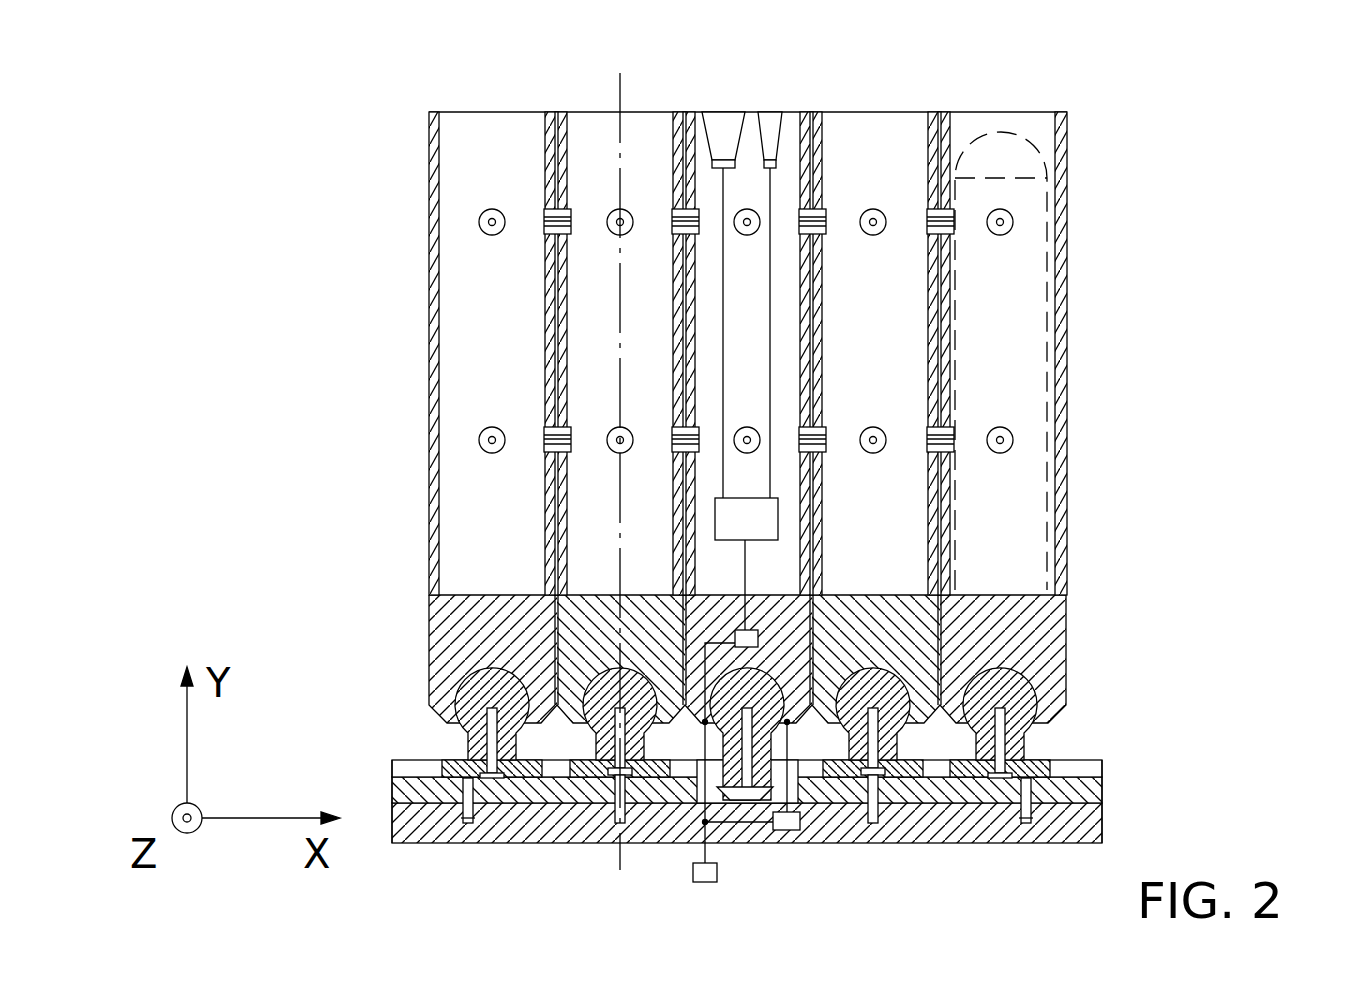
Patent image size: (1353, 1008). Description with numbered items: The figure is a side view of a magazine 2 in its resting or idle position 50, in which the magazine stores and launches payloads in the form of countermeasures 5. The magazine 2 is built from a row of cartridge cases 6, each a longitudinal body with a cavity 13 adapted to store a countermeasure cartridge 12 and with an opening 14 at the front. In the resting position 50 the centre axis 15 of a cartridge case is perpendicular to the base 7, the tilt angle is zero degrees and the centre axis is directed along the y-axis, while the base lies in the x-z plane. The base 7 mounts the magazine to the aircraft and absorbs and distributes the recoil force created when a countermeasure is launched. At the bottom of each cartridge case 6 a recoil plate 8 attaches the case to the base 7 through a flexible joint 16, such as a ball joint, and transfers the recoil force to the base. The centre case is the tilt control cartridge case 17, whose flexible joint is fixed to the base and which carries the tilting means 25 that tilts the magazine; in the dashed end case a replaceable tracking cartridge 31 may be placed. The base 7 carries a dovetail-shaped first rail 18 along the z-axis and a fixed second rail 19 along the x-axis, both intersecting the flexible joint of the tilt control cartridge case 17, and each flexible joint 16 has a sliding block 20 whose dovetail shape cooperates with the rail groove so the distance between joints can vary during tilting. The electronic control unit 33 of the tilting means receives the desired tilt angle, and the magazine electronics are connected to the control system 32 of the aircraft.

The magazine 2 is at (1098, 166).
The resting or idle position 50 is at (1213, 162).
The countermeasure 5 is at (1020, 205).
The countermeasure cartridge 12 is at (1020, 237).
The cartridge case 6 is at (1067, 378).
The cavity 13 is at (898, 132).
The opening 14 is at (870, 92).
The centre axis 15 is at (620, 92).
The tilt control cartridge case 17 is at (724, 84).
The tracking cartridge 31 is at (765, 82).
The recoil plate 8 is at (1000, 640).
The sliding block 20 is at (1052, 775).
The fixed second rail 19 is at (997, 787).
The base 7 is at (1067, 825).
The flexible joint 16 is at (790, 737).
The tilting means 25 is at (812, 821).
The electronic control unit of the tilting means 33 is at (795, 833).
The first rail 18 is at (730, 813).
The control system of the aircraft 32 is at (703, 882).